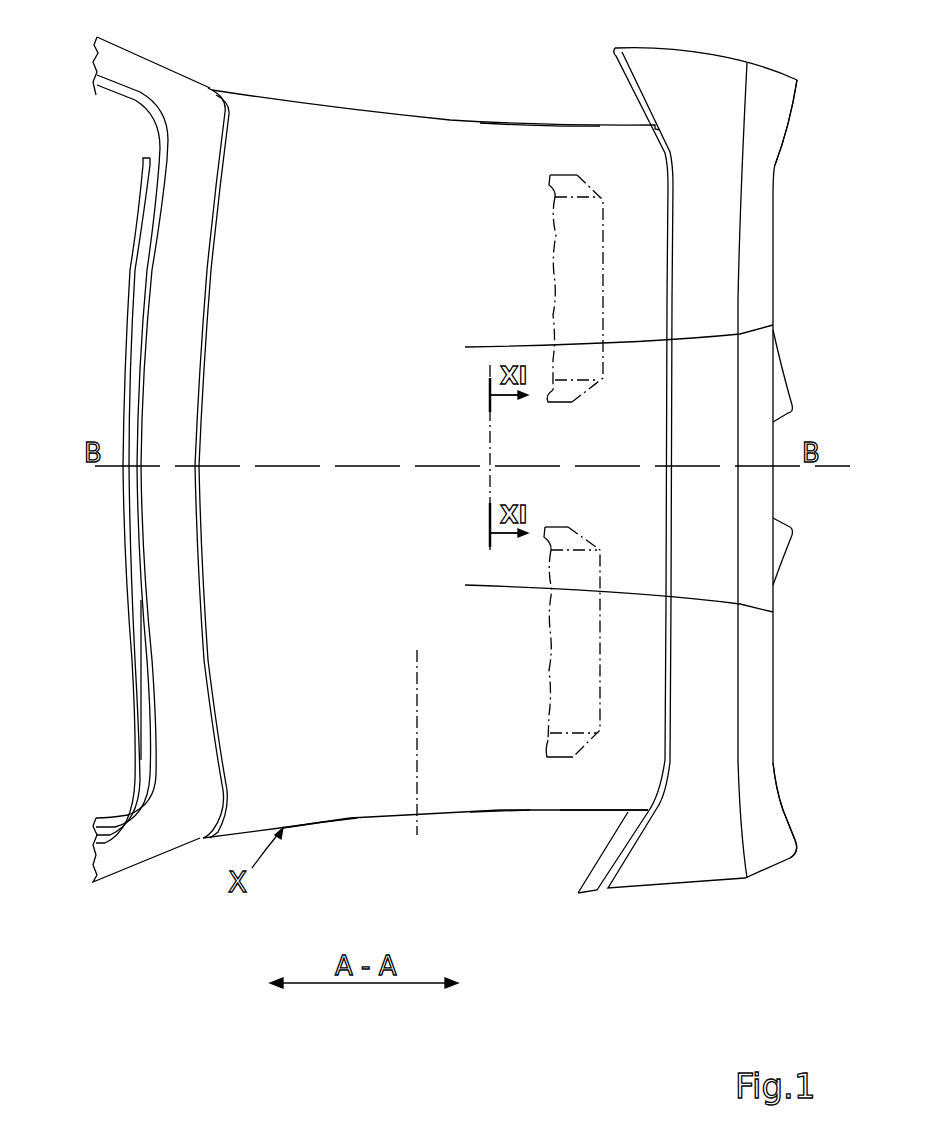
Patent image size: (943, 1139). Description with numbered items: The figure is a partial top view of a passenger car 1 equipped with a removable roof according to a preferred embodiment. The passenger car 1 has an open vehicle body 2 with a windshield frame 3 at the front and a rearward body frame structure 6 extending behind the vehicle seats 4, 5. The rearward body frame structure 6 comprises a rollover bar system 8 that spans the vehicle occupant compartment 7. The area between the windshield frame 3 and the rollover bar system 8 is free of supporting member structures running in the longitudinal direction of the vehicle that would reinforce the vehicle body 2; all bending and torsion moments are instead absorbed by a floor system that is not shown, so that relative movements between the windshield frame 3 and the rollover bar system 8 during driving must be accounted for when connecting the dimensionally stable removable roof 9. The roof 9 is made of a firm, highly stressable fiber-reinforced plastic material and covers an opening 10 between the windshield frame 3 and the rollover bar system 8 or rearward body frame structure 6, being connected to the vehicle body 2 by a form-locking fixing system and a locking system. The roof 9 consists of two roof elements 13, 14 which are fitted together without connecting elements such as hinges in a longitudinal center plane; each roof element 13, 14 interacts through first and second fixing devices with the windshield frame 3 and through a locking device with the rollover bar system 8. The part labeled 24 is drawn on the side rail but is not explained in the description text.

The passenger car 1 is at (394, 107).
The vehicle body 2 is at (690, 890).
The windshield frame 3 is at (133, 868).
The vehicle seat 4 is at (582, 680).
The vehicle seat 5 is at (588, 272).
The rearward body frame structure 6 is at (787, 812).
The vehicle occupant compartment 7 is at (593, 835).
The rollover bar system 8 is at (773, 172).
The removable roof 9 is at (357, 820).
The opening 10 is at (418, 759).
The roof element 13 is at (497, 812).
The roof element 14 is at (538, 122).
The rail flange 24 is at (168, 688).